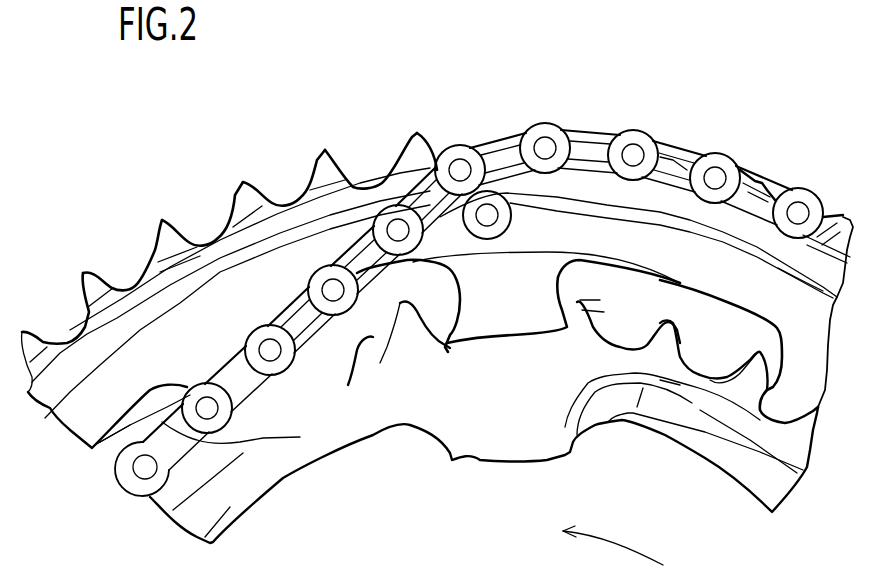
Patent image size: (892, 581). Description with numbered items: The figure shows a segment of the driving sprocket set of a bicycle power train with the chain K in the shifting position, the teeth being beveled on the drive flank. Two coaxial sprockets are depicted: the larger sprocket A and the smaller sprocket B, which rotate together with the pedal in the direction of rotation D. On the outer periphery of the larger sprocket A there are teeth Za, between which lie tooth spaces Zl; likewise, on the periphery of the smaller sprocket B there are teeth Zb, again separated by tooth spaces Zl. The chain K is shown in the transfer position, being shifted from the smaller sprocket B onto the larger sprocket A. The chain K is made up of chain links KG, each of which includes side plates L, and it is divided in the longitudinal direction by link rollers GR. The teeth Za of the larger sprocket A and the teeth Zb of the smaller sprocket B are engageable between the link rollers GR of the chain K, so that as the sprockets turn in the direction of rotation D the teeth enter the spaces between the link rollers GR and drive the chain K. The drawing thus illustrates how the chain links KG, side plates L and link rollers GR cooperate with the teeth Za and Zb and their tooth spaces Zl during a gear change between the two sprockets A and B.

The teeth Za is at (160, 220).
The tooth spaces Zl is at (138, 287).
The teeth Zb is at (278, 400).
The side plates L is at (500, 147).
The chain links KG is at (645, 122).
The link rollers GR is at (728, 170).
The larger sprocket A is at (743, 293).
The chain K is at (513, 295).
The smaller sprocket B is at (499, 400).
The direction of rotation D is at (614, 527).